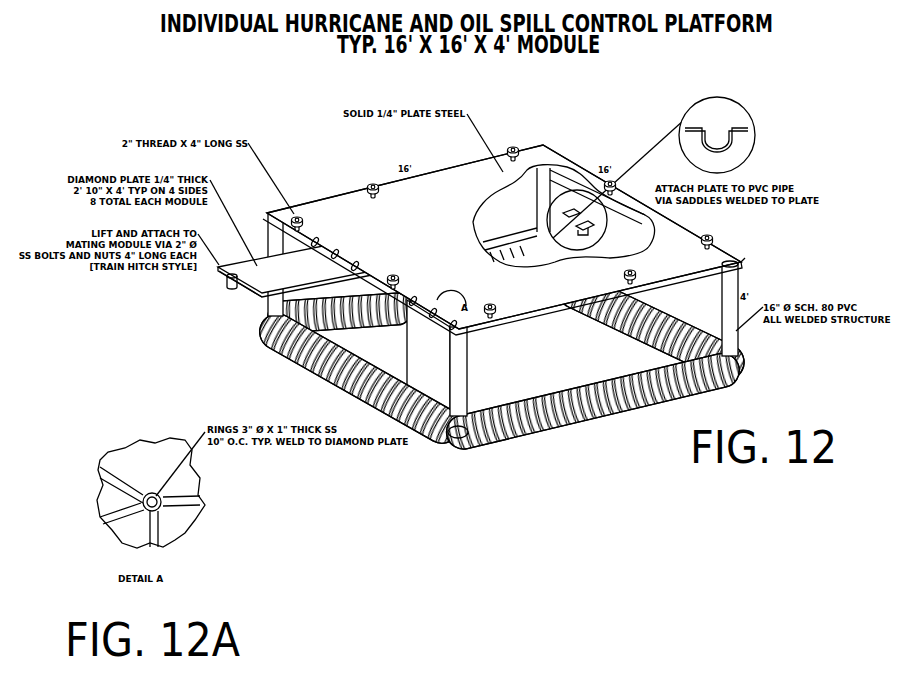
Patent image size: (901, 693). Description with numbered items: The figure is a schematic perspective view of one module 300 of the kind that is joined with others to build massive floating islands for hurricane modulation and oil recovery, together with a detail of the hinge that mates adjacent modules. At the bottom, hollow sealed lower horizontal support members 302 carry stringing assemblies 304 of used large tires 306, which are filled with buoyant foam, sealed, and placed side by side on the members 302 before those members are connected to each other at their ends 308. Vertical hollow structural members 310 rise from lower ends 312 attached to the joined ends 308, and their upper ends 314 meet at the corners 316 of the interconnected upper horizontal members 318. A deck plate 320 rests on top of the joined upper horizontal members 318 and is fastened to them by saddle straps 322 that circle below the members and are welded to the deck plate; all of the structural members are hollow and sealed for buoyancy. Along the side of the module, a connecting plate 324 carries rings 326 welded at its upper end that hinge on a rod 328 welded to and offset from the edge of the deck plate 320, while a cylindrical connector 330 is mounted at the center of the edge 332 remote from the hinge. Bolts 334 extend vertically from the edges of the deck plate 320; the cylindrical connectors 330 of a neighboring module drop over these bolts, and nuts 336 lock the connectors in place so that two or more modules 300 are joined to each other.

In FIG. 12, the module 300 is at (570, 126).
In FIG. 12, the lower horizontal support member 302 is at (463, 437).
In FIG. 12, the stringing assembly 304 is at (501, 383).
In FIG. 12, the tire 306 is at (627, 410).
In FIG. 12, the end 308 is at (457, 440).
In FIG. 12, the vertical hollow structural member 310 is at (737, 342).
In FIG. 12, the lower end 312 is at (455, 438).
In FIG. 12, the upper end 314 is at (745, 270).
In FIG. 12, the corner 316 is at (742, 262).
In FIG. 12, the upper horizontal member 318 is at (540, 317).
In FIG. 12, the deck plate 320 is at (450, 172).
In FIG. 12, the saddle strap 322 is at (588, 233).
In FIG. 12, the connecting plate 324 is at (236, 260).
In FIG. 12A, the ring 326 is at (160, 497).
In FIG. 12A, the rod 328 is at (163, 506).
In FIG. 12, the cylindrical connector 330 is at (229, 286).
In FIG. 12, the edge 332 is at (251, 292).
In FIG. 12, the bolt 334 is at (400, 280).
In FIG. 12, the nut 336 is at (380, 188).